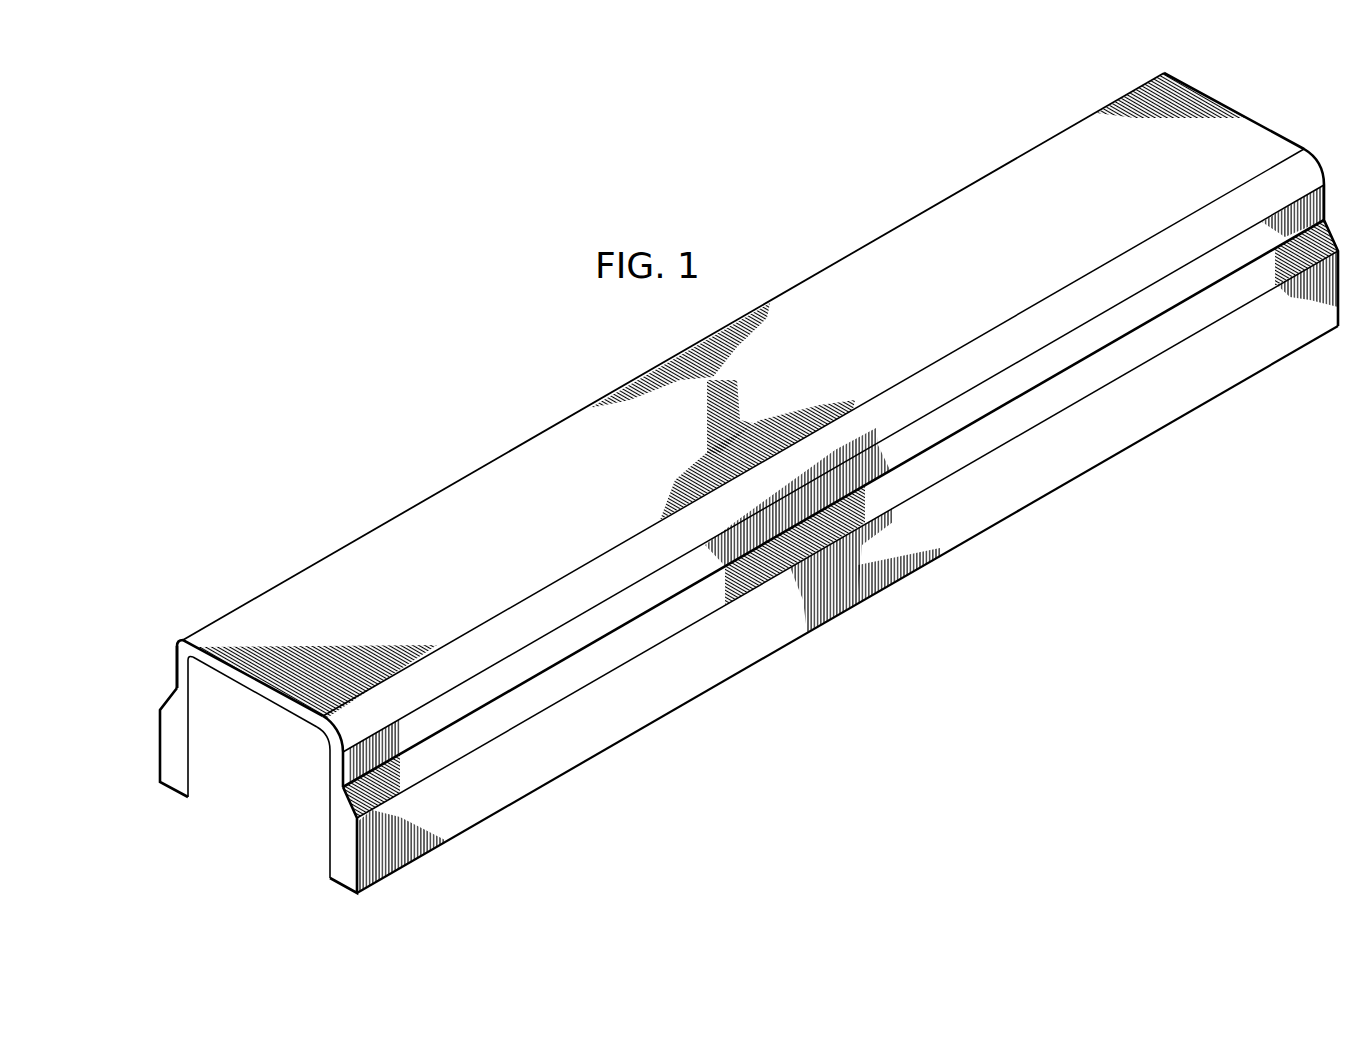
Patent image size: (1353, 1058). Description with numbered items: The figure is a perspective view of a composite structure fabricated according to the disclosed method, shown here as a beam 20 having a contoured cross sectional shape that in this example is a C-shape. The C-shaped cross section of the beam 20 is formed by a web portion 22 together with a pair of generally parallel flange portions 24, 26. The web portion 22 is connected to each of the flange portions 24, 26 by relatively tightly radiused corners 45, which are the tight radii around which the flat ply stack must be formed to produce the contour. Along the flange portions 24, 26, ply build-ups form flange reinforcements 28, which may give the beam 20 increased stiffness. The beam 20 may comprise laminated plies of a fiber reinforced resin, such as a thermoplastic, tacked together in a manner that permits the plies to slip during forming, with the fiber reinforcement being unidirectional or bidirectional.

The beam 20 is at (449, 423).
The web portion 22 is at (308, 575).
The flange portion 24 is at (173, 682).
The flange portion 26 is at (527, 663).
The flange reinforcement 28 is at (149, 735).
The radiused corner 45 is at (172, 630).